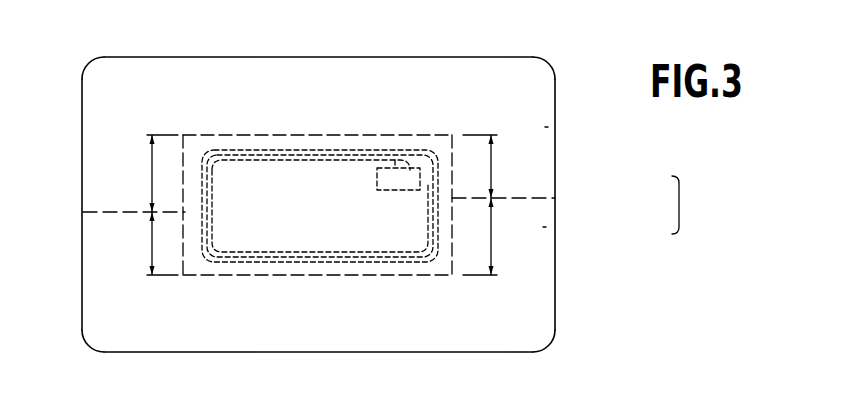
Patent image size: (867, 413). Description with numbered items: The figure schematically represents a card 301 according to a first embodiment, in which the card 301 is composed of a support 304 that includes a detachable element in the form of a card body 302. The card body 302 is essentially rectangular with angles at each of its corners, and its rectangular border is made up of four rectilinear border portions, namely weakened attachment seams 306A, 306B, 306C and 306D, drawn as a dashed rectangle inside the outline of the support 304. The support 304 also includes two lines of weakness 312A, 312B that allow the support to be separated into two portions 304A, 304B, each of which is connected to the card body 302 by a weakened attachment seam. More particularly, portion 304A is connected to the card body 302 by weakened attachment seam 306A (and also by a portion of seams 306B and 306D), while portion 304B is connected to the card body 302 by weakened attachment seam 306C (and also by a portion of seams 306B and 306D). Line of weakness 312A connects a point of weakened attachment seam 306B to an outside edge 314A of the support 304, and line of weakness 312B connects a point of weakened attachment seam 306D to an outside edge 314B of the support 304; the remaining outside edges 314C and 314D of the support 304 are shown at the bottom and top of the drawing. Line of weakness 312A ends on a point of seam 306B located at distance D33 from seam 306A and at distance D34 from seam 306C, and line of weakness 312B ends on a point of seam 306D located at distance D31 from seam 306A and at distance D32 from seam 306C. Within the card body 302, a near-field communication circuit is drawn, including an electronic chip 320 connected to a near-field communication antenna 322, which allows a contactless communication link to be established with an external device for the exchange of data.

The card 301 is at (562, 106).
The card body 302 is at (272, 232).
The support 304 is at (692, 205).
The portion of the support 304A is at (545, 127).
The portion of the support 304B is at (543, 227).
The weakened attachment seam 306A is at (320, 135).
The weakened attachment seam 306B is at (452, 160).
The weakened attachment seam 306C is at (322, 276).
The weakened attachment seam 306D is at (184, 160).
The line of weakness 312A is at (541, 198).
The line of weakness 312B is at (105, 212).
The outside edge 314A is at (555, 245).
The outside edge 314B is at (80, 245).
The bottom card edge 314C is at (430, 352).
The top card edge 314D is at (430, 57).
The electronic chip 320 is at (390, 191).
The near-field communication antenna 322 is at (292, 152).
The distance D31 is at (144, 173).
The distance D32 is at (144, 243).
The distance D33 is at (496, 166).
The distance D34 is at (496, 236).